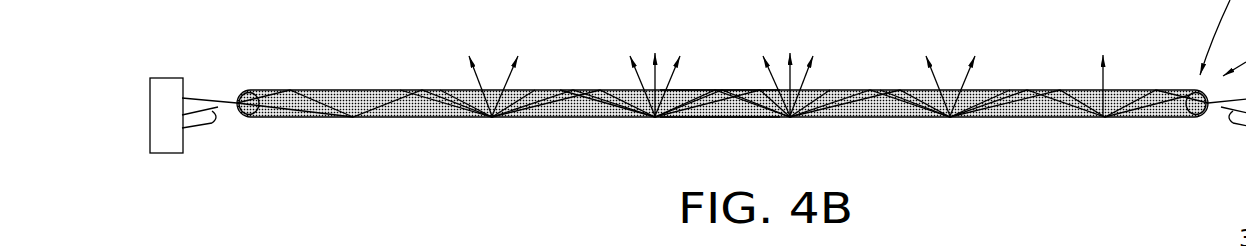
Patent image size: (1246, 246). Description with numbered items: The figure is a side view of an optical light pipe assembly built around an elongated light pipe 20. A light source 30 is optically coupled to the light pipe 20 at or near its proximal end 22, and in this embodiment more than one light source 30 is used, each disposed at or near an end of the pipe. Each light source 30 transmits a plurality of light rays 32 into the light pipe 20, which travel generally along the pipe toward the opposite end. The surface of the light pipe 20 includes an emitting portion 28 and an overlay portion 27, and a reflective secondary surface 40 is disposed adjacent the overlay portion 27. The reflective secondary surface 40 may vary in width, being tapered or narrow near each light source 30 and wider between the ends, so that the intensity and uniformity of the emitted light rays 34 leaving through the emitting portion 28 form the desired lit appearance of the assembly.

The light pipe 20 is at (872, 117).
The proximal end 22 is at (227, 72).
The overlay portion 27 is at (688, 104).
The emitting portion 28 is at (696, 93).
The light source 30 is at (165, 154).
The light rays 32 is at (218, 107).
The emitted light rays 34 is at (643, 88).
The reflective secondary surface 40 is at (720, 118).